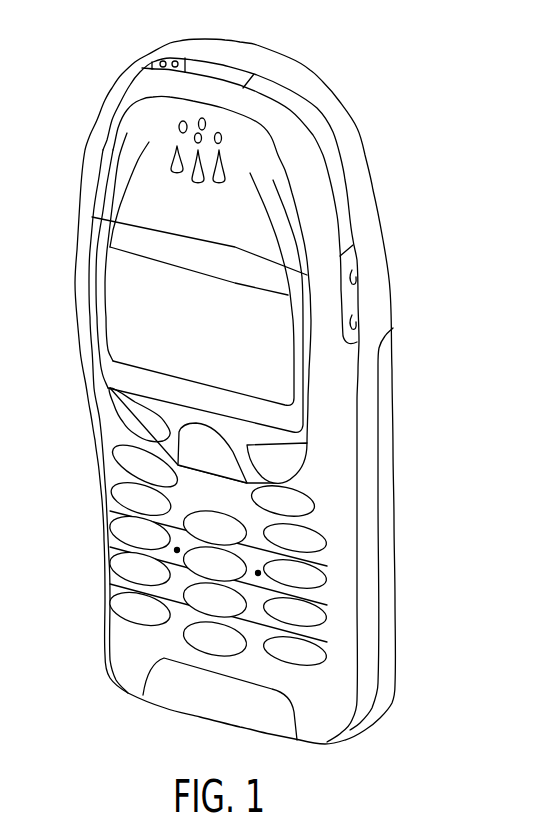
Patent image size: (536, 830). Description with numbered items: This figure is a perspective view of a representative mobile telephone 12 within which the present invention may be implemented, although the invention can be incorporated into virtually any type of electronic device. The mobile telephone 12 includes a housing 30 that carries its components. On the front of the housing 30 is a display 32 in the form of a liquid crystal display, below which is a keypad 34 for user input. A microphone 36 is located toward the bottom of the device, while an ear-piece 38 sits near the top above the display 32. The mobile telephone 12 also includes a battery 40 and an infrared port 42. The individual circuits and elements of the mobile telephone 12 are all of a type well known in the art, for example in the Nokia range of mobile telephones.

The mobile telephone 12 is at (340, 45).
The housing 30 is at (362, 183).
The display 32 is at (273, 366).
The keypad 34 is at (295, 657).
The microphone 36 is at (165, 690).
The ear-piece 38 is at (172, 145).
The battery 40 is at (381, 638).
The infrared port 42 is at (217, 67).